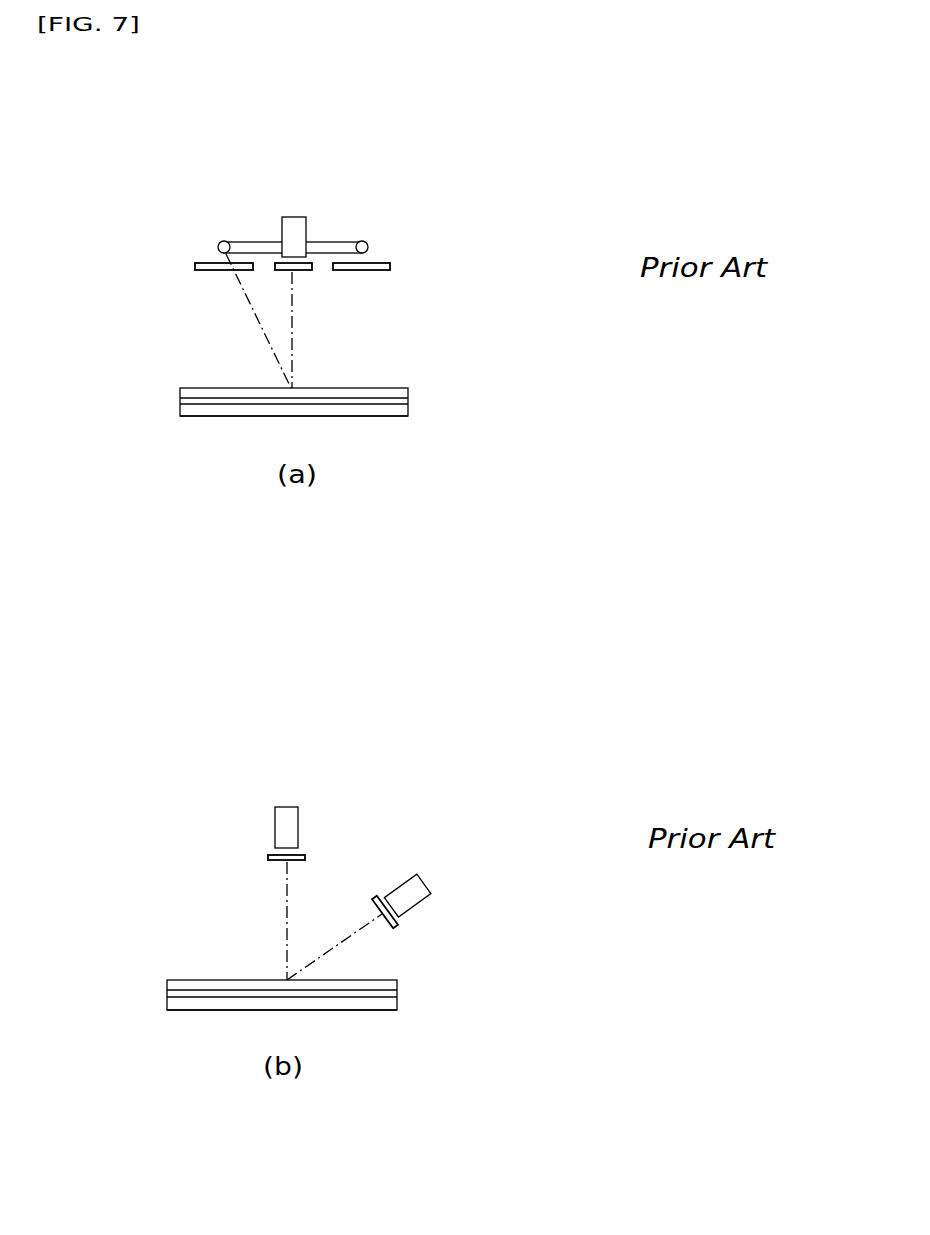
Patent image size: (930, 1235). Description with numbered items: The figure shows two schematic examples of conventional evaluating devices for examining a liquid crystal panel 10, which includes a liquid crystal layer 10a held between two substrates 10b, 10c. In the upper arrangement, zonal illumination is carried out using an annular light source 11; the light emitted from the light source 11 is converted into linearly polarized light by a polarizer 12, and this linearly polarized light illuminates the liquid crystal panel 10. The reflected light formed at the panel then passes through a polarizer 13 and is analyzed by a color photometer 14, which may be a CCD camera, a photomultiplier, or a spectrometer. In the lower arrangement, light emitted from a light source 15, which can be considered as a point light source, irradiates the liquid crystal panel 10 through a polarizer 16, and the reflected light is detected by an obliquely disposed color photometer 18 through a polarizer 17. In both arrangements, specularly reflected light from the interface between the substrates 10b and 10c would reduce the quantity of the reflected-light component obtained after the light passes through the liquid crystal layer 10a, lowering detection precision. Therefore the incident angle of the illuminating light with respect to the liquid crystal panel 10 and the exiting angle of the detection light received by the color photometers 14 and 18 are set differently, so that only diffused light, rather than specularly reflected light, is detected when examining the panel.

The liquid crystal panel 10 is at (168, 402).
The liquid crystal layer 10a is at (408, 400).
The substrate 10b is at (392, 389).
The substrate 10c is at (382, 416).
The annular light source 11 is at (337, 241).
The polarizer 12 is at (390, 268).
The polarizer 13 is at (303, 271).
The color photometer 14 is at (296, 220).
The light source 15 is at (283, 822).
The polarizer 16 is at (268, 856).
The polarizer 17 is at (378, 897).
The color photometer 18 is at (427, 880).